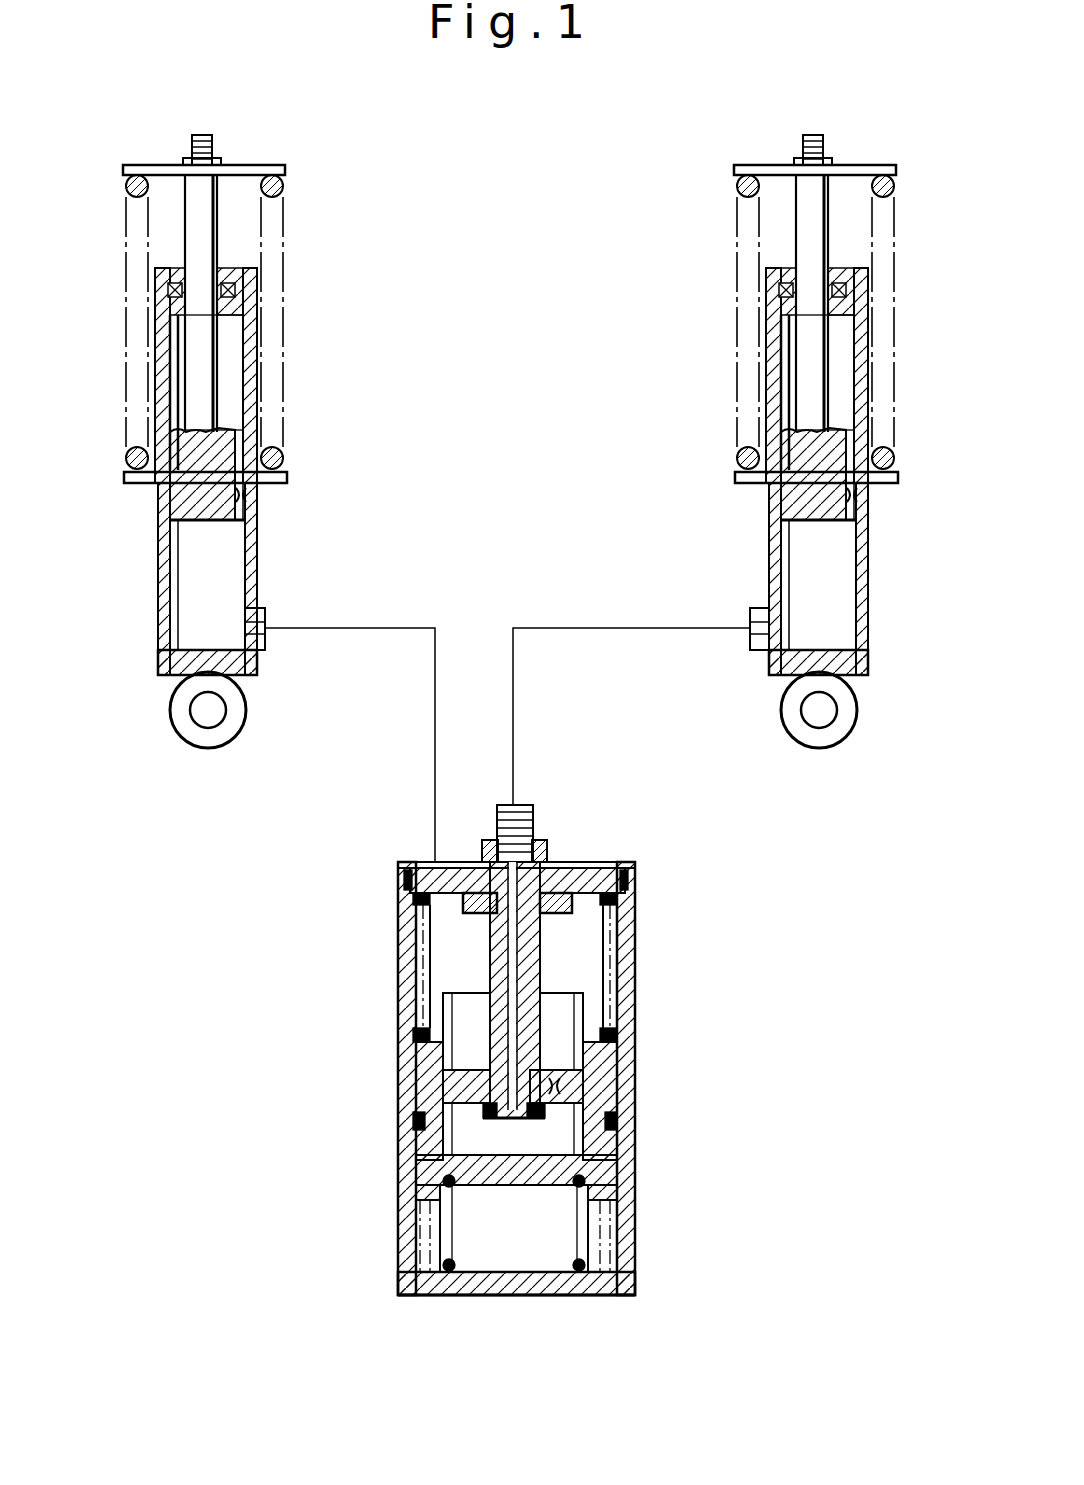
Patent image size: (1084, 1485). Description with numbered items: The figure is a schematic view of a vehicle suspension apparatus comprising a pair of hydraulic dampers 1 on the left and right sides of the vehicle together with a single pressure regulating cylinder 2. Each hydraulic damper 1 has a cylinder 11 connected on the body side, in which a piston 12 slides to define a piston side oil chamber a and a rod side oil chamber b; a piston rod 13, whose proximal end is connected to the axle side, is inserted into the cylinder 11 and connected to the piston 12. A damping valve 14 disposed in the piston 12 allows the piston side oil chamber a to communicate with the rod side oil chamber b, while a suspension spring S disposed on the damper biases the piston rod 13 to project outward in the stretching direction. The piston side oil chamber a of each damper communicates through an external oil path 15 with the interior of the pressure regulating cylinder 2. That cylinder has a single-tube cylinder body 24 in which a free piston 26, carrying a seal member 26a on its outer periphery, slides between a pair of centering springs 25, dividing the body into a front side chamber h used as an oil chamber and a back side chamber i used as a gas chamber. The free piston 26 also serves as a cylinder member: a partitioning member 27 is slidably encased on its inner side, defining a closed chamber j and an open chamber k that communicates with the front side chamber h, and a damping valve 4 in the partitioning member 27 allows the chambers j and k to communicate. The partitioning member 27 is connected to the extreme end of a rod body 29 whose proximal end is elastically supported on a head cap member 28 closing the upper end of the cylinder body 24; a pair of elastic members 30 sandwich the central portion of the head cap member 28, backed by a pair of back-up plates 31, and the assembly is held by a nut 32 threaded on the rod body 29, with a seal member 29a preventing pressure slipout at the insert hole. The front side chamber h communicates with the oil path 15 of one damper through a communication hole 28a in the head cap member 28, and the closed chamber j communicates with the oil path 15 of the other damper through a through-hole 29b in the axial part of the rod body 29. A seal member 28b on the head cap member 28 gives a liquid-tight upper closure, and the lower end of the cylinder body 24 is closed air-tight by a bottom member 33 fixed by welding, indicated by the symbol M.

The hydraulic damper 1 is at (286, 197).
The pressure regulating cylinder 2 is at (388, 1016).
The damping valve 4 is at (560, 1085).
The cylinder 11 is at (158, 612).
The piston 12 is at (185, 505).
The piston rod 13 is at (220, 238).
The damping valve 14 is at (240, 493).
The oil path 15 is at (352, 628).
The cylinder body 24 is at (486, 1078).
The spring 25 is at (612, 902).
The free piston 26 is at (612, 1150).
The seal member 26a is at (412, 1122).
The partitioning member 27 is at (470, 1085).
The head cap member 28 is at (597, 862).
The communication hole 28a is at (414, 878).
The seal member 28b is at (675, 874).
The rod body 29 is at (542, 950).
The seal member 29a is at (478, 940).
The through-hole 29b is at (516, 1118).
The elastic member 30 is at (550, 855).
The back-up plate 31 is at (482, 848).
The nut 32 is at (534, 830).
The bottom member 33 is at (482, 1283).
The piston side oil chamber a is at (220, 618).
The rod side oil chamber b is at (235, 382).
The suspension spring S is at (742, 458).
The front side chamber h is at (422, 990).
The open chamber k is at (484, 1046).
The closed chamber j is at (484, 1148).
The back side chamber i is at (491, 1246).
The welding M is at (636, 1288).